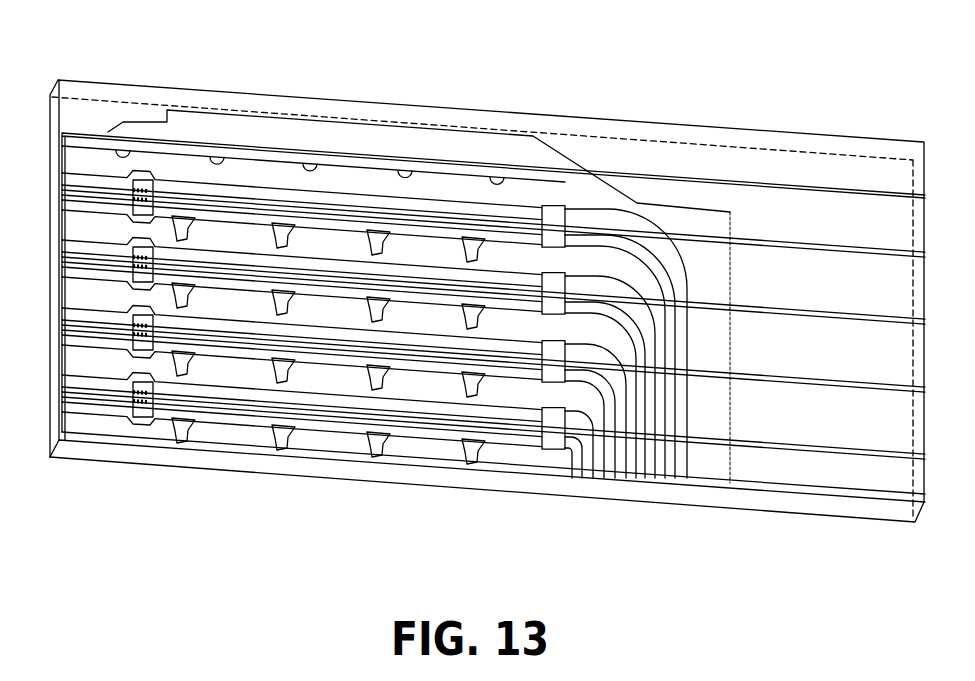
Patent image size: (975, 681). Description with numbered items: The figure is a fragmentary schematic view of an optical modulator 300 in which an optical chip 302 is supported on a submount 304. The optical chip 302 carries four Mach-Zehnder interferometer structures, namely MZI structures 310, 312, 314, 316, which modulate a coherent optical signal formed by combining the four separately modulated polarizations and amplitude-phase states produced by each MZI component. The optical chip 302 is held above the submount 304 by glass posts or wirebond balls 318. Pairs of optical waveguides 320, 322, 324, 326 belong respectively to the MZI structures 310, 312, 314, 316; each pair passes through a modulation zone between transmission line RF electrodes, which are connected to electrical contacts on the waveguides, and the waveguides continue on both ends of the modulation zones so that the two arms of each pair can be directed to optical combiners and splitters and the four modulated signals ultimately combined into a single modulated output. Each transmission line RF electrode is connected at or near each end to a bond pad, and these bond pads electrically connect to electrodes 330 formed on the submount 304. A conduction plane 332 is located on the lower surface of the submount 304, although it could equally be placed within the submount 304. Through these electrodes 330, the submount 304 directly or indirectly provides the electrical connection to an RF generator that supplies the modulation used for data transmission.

The modulator 300 is at (642, 73).
The optical chip 302 is at (835, 498).
The submount 304 is at (738, 508).
The MZI structure 310 is at (248, 170).
The MZI structure 312 is at (438, 257).
The MZI structure 314 is at (228, 363).
The MZI structure 316 is at (313, 447).
The glass posts or wirebond balls 318 is at (490, 243).
The pair of optical waveguides 320 is at (793, 240).
The pair of optical waveguides 322 is at (770, 305).
The pair of optical waveguides 324 is at (778, 377).
The pair of optical waveguides 326 is at (782, 440).
The electrodes 330 is at (89, 178).
The conduction plane 332 is at (427, 488).